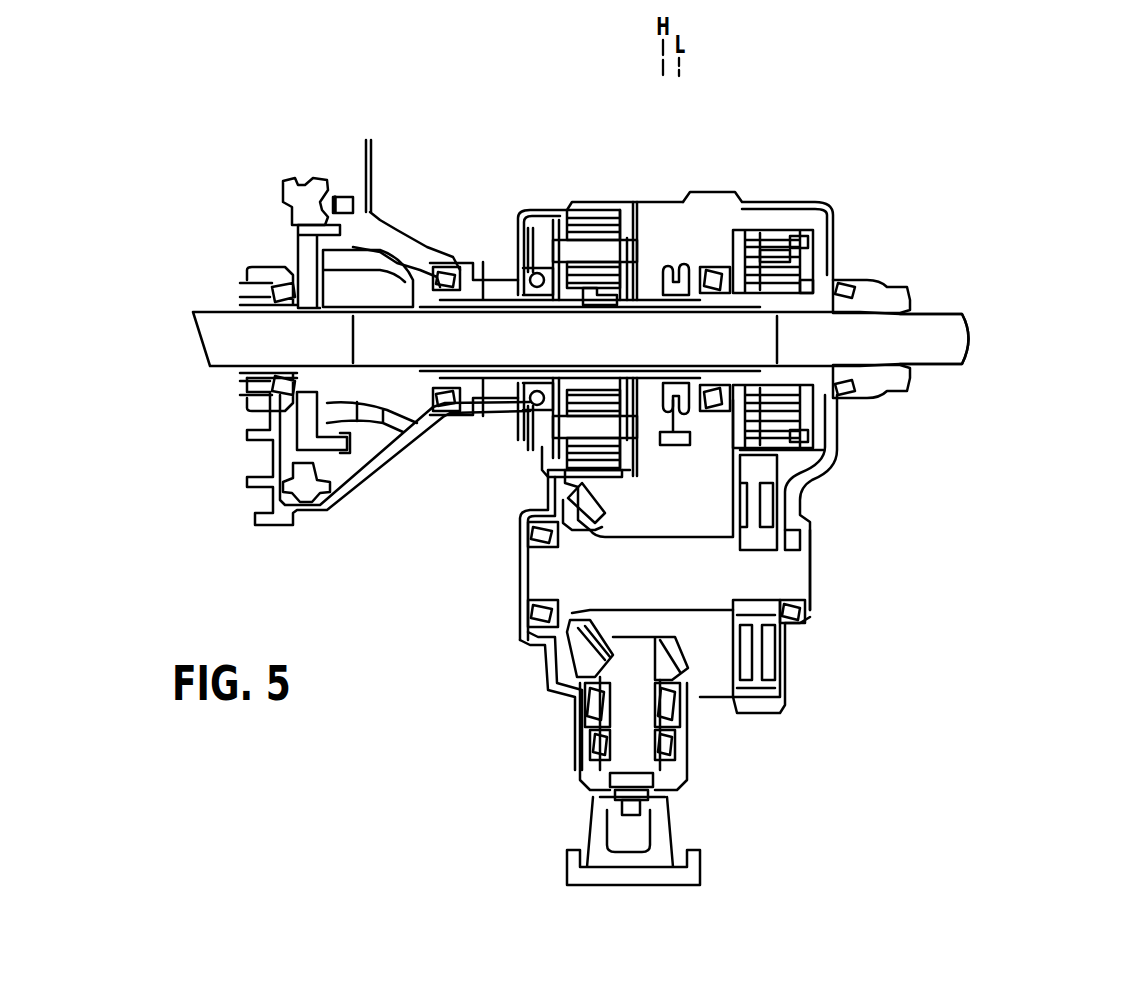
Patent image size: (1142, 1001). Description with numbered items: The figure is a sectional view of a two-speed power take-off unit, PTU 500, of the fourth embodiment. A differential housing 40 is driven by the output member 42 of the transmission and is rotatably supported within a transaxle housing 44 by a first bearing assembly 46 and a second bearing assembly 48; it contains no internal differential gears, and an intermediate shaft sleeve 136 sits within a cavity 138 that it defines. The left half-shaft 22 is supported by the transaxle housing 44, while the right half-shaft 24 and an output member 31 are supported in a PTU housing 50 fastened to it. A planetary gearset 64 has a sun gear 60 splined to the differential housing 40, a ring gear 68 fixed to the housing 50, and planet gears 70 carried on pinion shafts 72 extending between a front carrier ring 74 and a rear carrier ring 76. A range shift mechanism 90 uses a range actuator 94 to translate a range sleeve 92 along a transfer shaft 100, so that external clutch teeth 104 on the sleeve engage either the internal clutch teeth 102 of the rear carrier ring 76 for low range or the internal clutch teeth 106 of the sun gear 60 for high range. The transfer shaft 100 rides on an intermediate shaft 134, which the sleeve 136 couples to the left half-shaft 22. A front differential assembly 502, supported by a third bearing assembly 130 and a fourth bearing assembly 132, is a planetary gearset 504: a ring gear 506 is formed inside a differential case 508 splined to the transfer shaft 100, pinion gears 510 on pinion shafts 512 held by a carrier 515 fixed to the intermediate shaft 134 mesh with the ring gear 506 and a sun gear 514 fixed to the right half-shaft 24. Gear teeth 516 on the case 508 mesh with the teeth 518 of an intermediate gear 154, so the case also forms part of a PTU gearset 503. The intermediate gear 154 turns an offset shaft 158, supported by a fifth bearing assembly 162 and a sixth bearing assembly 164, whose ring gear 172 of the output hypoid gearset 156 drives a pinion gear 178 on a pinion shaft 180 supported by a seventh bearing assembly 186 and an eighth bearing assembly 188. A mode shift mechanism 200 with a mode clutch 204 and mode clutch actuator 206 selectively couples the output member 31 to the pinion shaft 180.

The left half-shaft 22 is at (220, 350).
The right half-shaft 24 is at (960, 327).
The output member 31 is at (540, 795).
The differential housing 40 is at (338, 265).
The output member of transmission 42 is at (317, 193).
The transaxle housing 44 is at (395, 252).
The first bearing assembly 46 is at (252, 283).
The second bearing assembly 48 is at (448, 277).
The PTU housing 50 is at (517, 212).
The sun gear 60 is at (480, 307).
The planetary gearset 64 is at (590, 203).
The ring gear 68 is at (575, 208).
The planet gears 70 is at (603, 208).
The pinion shaft 72 is at (645, 225).
The front carrier ring 74 is at (550, 208).
The rear carrier ring 76 is at (630, 247).
The range shift mechanism 90 is at (708, 450).
The range sleeve 92 is at (673, 282).
The range actuator 94 is at (677, 437).
The transfer shaft 100 is at (690, 308).
The internal clutch teeth 102 is at (625, 262).
The external clutch teeth 104 is at (627, 393).
The internal clutch teeth 106 is at (597, 293).
The third bearing assembly 130 is at (705, 268).
The fourth bearing assembly 132 is at (843, 390).
The intermediate shaft 134 is at (397, 370).
The intermediate shaft sleeve 136 is at (342, 370).
The cavity 138 is at (383, 303).
The intermediate gear 154 is at (767, 674).
The output hypoid gearset 156 is at (524, 648).
The offset shaft 158 is at (787, 588).
The fifth bearing assembly 162 is at (800, 616).
The sixth bearing assembly 164 is at (533, 612).
The ring gear 172 is at (587, 630).
The pinion gear 178 is at (683, 640).
The pinion shaft 180 is at (680, 723).
The seventh bearing assembly 186 is at (673, 703).
The eighth bearing assembly 188 is at (673, 743).
The mode shift mechanism 200 is at (612, 802).
The mode clutch 204 is at (643, 787).
The mode clutch actuator 206 is at (640, 803).
The PTU 500 is at (997, 143).
The front differential assembly 502 is at (770, 195).
The PTU gearset 503 is at (853, 547).
The planetary gearset 504 is at (800, 222).
The ring gear 506 is at (817, 230).
The differential case 508 is at (813, 240).
The pinion gears 510 is at (810, 252).
The pinion shaft 512 is at (790, 256).
The sun gear 514 is at (790, 290).
The carrier 515 is at (773, 323).
The gear teeth 516 is at (757, 460).
The teeth 518 is at (760, 467).